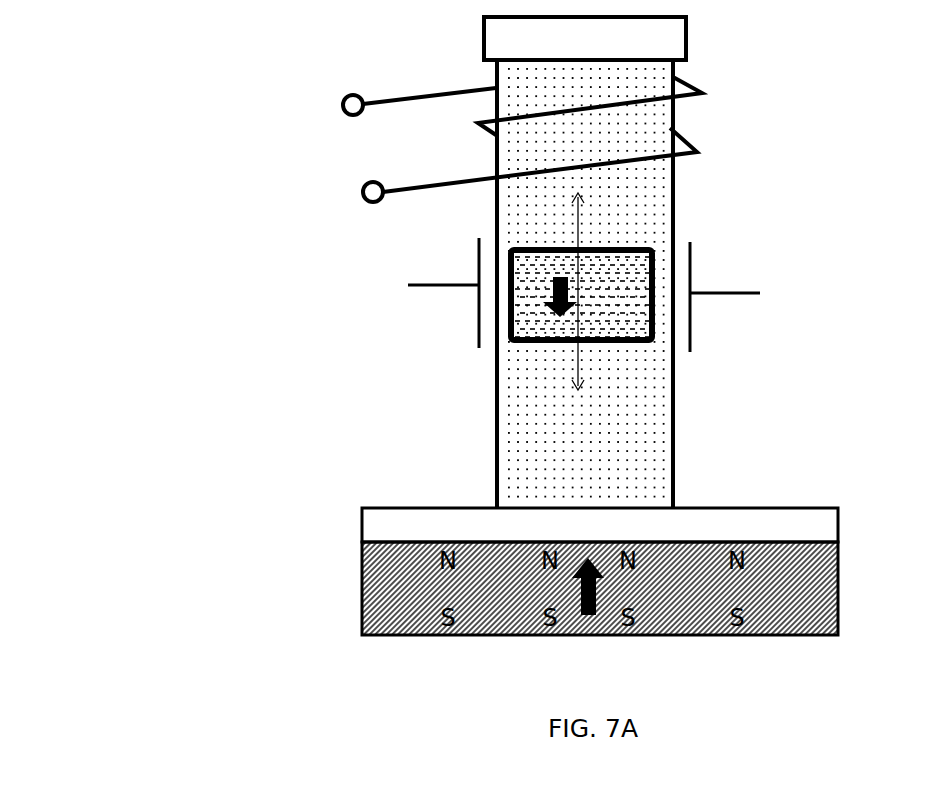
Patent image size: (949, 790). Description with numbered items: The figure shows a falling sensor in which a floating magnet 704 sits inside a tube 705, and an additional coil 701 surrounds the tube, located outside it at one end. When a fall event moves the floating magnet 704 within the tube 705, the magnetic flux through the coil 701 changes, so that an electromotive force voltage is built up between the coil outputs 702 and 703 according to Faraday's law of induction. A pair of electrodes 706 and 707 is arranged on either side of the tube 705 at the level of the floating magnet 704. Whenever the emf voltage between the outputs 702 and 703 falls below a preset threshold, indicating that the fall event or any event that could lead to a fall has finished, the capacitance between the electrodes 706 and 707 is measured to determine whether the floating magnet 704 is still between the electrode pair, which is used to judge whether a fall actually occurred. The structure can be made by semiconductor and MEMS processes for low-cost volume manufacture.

The coil 701 is at (437, 90).
The output 702 is at (342, 100).
The output 703 is at (365, 187).
The floating magnet 704 is at (525, 275).
The tube 705 is at (682, 203).
The electrode 706 is at (468, 323).
The electrode 707 is at (692, 287).